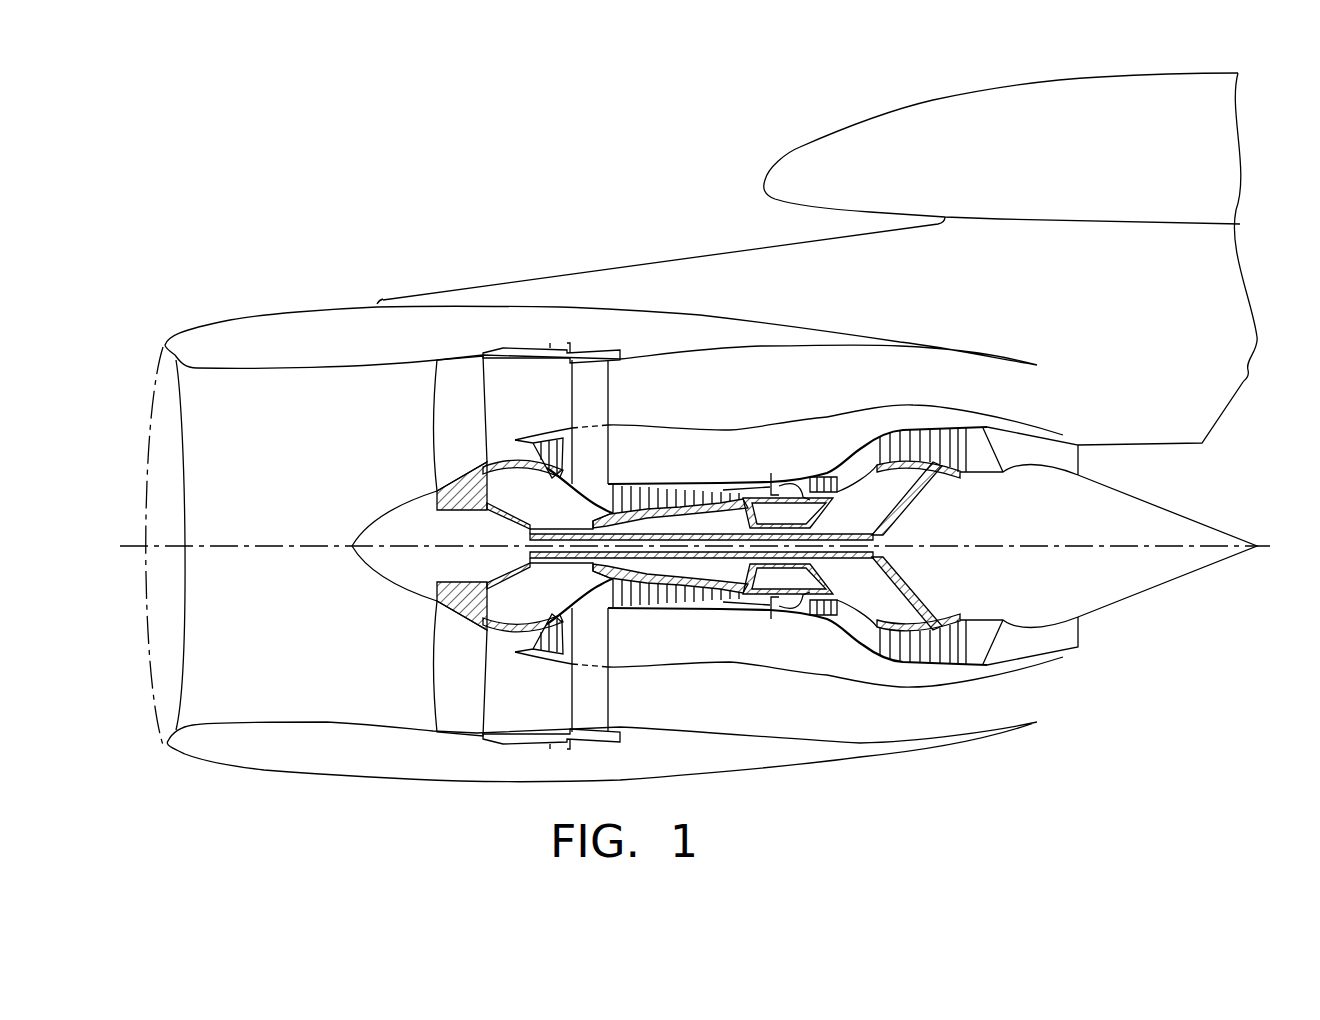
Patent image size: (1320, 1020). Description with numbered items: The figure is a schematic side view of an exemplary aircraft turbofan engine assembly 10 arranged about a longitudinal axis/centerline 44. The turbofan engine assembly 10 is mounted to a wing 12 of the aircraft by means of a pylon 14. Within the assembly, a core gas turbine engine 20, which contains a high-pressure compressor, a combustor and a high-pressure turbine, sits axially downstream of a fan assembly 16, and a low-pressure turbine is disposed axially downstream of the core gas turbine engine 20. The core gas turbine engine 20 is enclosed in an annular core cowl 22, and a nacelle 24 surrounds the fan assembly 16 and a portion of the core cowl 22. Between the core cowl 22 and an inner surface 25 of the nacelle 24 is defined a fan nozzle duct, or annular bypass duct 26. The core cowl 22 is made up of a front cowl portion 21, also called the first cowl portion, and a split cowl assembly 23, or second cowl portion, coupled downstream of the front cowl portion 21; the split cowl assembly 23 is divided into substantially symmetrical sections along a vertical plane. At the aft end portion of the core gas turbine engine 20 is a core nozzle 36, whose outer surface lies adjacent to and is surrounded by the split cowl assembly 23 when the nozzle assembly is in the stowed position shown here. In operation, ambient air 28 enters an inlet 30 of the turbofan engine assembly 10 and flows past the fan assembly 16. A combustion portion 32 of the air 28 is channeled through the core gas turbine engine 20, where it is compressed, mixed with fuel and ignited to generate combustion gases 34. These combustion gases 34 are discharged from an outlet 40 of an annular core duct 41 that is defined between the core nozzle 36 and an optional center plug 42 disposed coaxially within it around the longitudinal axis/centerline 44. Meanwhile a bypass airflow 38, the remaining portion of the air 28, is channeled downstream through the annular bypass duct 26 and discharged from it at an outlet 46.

The turbofan engine assembly 10 is at (933, 290).
The wing 12 is at (793, 143).
The pylon 14 is at (1245, 375).
The fan assembly 16 is at (440, 445).
The core gas turbine engine 20 is at (525, 604).
The front cowl portion 21 is at (667, 447).
The core cowl 22 is at (633, 425).
The split cowl assembly 23 is at (827, 427).
The nacelle 24 is at (292, 312).
The inner surface of nacelle 25 is at (508, 358).
The annular bypass duct 26 is at (757, 397).
The ambient air 28 is at (213, 408).
The inlet 30 is at (185, 683).
The combustion portion of air 32 is at (457, 640).
The combustion gases 34 is at (1047, 453).
The core nozzle 36 is at (1050, 648).
The bypass airflow 38 is at (1010, 708).
The outlet 40 is at (1087, 628).
The annular core duct 41 is at (1002, 647).
The center plug 42 is at (1037, 524).
The longitudinal axis/centerline 44 is at (1127, 543).
The outlet 46 is at (1037, 395).